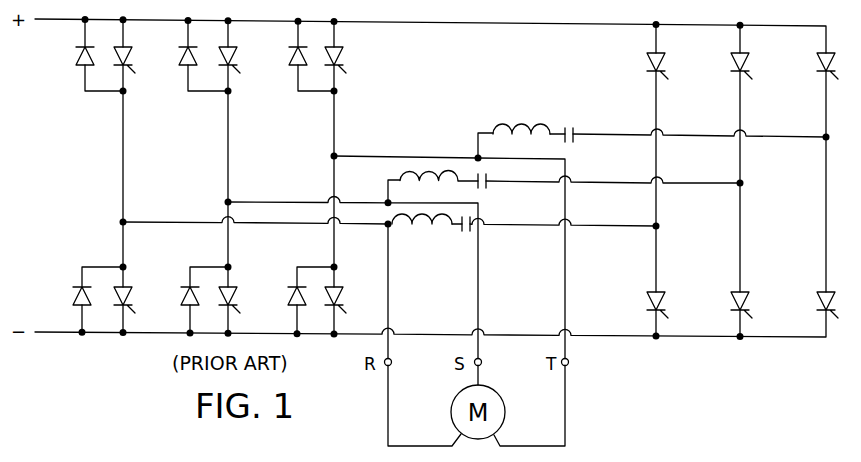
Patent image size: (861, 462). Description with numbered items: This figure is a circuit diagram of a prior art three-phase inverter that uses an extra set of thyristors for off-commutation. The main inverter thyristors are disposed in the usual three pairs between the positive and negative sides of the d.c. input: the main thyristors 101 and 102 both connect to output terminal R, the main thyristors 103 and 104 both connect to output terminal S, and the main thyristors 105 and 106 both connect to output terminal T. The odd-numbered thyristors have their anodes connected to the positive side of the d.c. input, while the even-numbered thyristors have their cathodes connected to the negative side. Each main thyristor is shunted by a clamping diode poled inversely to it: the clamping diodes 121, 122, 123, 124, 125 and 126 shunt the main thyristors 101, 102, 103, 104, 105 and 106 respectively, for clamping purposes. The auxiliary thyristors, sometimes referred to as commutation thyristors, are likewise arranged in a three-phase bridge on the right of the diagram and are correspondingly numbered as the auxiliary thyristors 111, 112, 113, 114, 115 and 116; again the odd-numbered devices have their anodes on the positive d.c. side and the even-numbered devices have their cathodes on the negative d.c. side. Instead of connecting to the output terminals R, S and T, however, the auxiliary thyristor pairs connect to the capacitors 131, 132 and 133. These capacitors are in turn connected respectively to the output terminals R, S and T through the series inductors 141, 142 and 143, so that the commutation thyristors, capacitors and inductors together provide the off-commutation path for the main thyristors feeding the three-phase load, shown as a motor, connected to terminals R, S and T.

The main inverter thyristor 101 is at (137, 52).
The main inverter thyristor 102 is at (139, 305).
The main inverter thyristor 103 is at (242, 52).
The main inverter thyristor 104 is at (245, 308).
The main inverter thyristor 105 is at (348, 52).
The main inverter thyristor 106 is at (352, 308).
The auxiliary thyristor 111 is at (642, 59).
The auxiliary thyristor 112 is at (641, 311).
The auxiliary thyristor 113 is at (727, 59).
The auxiliary thyristor 114 is at (725, 311).
The auxiliary thyristor 115 is at (813, 59).
The auxiliary thyristor 116 is at (810, 311).
The clamping diode 121 is at (64, 67).
The clamping diode 122 is at (55, 290).
The clamping diode 123 is at (174, 73).
The clamping diode 124 is at (178, 279).
The clamping diode 125 is at (286, 74).
The clamping diode 126 is at (287, 279).
The capacitor 131 is at (464, 235).
The capacitor 132 is at (483, 190).
The capacitor 133 is at (584, 117).
The series inductor 141 is at (406, 232).
The series inductor 142 is at (403, 172).
The series inductor 143 is at (524, 110).